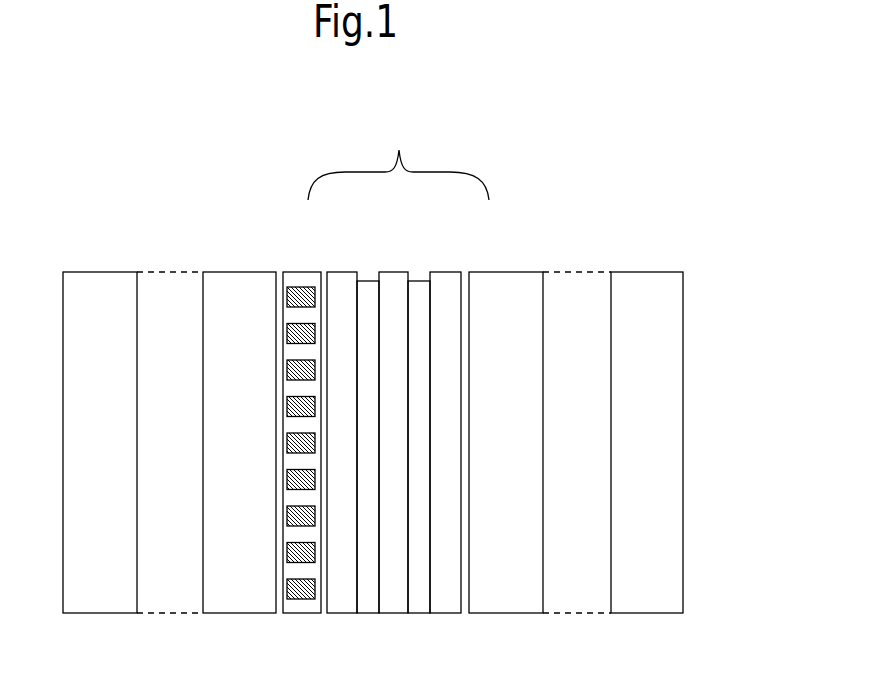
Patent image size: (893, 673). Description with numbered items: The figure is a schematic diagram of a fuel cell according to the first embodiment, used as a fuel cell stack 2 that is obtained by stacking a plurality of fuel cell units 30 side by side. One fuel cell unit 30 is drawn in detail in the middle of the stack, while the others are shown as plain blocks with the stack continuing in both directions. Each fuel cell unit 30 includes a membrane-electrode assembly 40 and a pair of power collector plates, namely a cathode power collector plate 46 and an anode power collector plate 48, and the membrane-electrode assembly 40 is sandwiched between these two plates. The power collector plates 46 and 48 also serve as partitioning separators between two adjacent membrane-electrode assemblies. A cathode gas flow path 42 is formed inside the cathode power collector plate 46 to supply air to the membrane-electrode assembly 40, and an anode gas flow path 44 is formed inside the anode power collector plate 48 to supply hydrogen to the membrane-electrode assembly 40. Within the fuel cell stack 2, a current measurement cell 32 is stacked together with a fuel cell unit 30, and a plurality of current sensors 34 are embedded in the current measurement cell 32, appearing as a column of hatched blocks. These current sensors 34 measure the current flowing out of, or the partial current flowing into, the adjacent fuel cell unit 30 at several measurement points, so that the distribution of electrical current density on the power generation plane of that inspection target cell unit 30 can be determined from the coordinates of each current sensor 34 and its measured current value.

The fuel cell stack 2 is at (527, 165).
The fuel cell unit 30 is at (68, 240).
The current measurement cell 32 is at (300, 272).
The current sensor 34 is at (287, 442).
The membrane-electrode assembly 40 is at (390, 272).
The cathode gas flow path 42 is at (420, 281).
The anode gas flow path 44 is at (370, 281).
The cathode power collector plate 46 is at (443, 272).
The anode power collector plate 48 is at (342, 272).